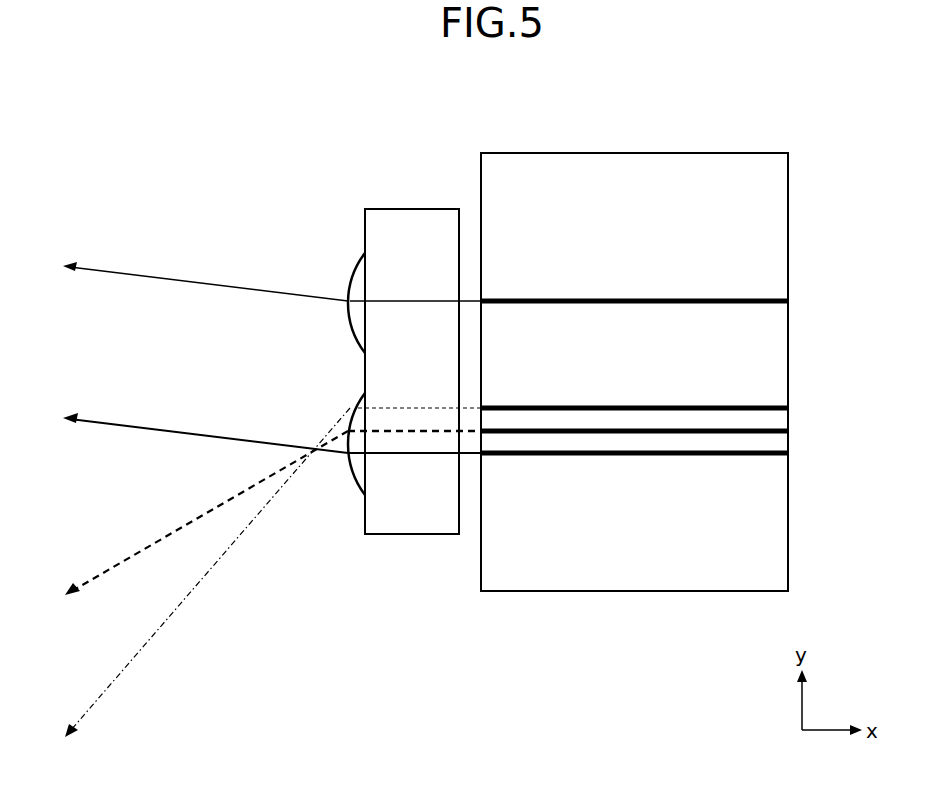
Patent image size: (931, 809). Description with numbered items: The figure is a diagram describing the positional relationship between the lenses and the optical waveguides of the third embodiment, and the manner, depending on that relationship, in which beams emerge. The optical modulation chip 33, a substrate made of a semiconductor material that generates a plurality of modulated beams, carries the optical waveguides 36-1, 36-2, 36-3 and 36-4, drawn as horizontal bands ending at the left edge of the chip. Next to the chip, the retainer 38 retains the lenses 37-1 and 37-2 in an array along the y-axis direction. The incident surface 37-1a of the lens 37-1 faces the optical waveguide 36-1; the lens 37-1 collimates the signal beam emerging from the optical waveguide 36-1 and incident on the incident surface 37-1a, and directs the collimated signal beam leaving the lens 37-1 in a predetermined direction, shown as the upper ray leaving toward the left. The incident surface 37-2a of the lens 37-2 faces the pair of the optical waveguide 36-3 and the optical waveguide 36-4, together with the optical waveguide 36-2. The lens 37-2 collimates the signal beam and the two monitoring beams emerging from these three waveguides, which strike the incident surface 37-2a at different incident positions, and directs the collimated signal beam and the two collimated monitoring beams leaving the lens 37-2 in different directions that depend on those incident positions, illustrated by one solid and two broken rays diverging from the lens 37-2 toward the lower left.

The optical modulation chip 33 is at (757, 152).
The optical waveguide 36-1 is at (576, 297).
The optical waveguide 36-2 is at (663, 405).
The optical waveguide 36-3 is at (666, 457).
The optical waveguide 36-4 is at (575, 434).
The lens 37-1 is at (353, 277).
The incident surface 37-1a is at (367, 268).
The lens 37-2 is at (357, 481).
The incident surface 37-2a is at (365, 476).
The retainer 38 is at (436, 209).